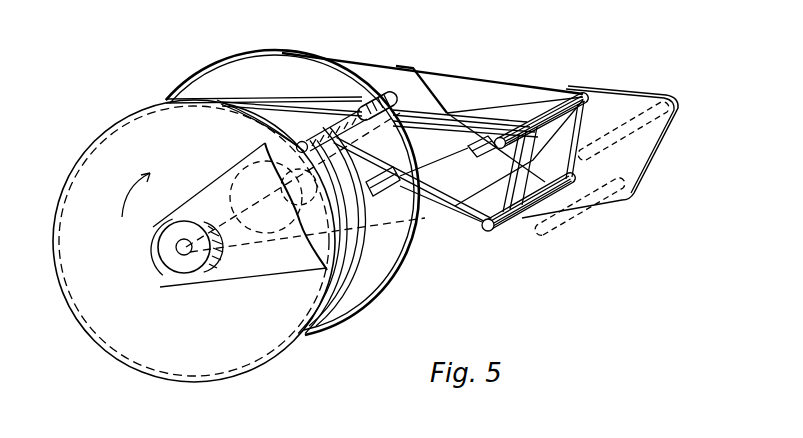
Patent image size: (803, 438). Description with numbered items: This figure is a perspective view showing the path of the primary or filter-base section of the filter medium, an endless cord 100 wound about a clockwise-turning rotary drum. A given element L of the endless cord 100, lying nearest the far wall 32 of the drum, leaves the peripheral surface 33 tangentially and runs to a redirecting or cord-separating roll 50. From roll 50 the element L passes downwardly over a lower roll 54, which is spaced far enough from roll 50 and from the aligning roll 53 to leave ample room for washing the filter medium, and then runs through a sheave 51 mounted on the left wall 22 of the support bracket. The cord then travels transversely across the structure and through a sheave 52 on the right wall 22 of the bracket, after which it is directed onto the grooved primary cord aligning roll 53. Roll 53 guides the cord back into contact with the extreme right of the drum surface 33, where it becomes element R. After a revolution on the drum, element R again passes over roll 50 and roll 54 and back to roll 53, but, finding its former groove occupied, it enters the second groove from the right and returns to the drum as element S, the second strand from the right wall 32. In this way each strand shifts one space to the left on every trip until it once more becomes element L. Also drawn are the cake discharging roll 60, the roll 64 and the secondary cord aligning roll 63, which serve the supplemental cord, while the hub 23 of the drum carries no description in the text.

The far wall 32 is at (118, 123).
The peripheral surface 33 is at (212, 84).
The walls of the support bracket 22 is at (415, 70).
The hub 23 is at (183, 268).
The primary cord aligning roll 53 is at (373, 96).
The secondary cord aligning roll 63 is at (437, 110).
The endless cord 100 is at (507, 84).
The redirecting or cord-separating roll 50 is at (586, 94).
The sheave 51 is at (473, 160).
The sheave 52 is at (380, 187).
The lower roll 54 is at (507, 218).
The cake discharging roll 60 is at (662, 128).
The roll 64 is at (580, 210).
The element L of the cord L is at (311, 58).
The element S is at (318, 138).
The element R is at (306, 168).